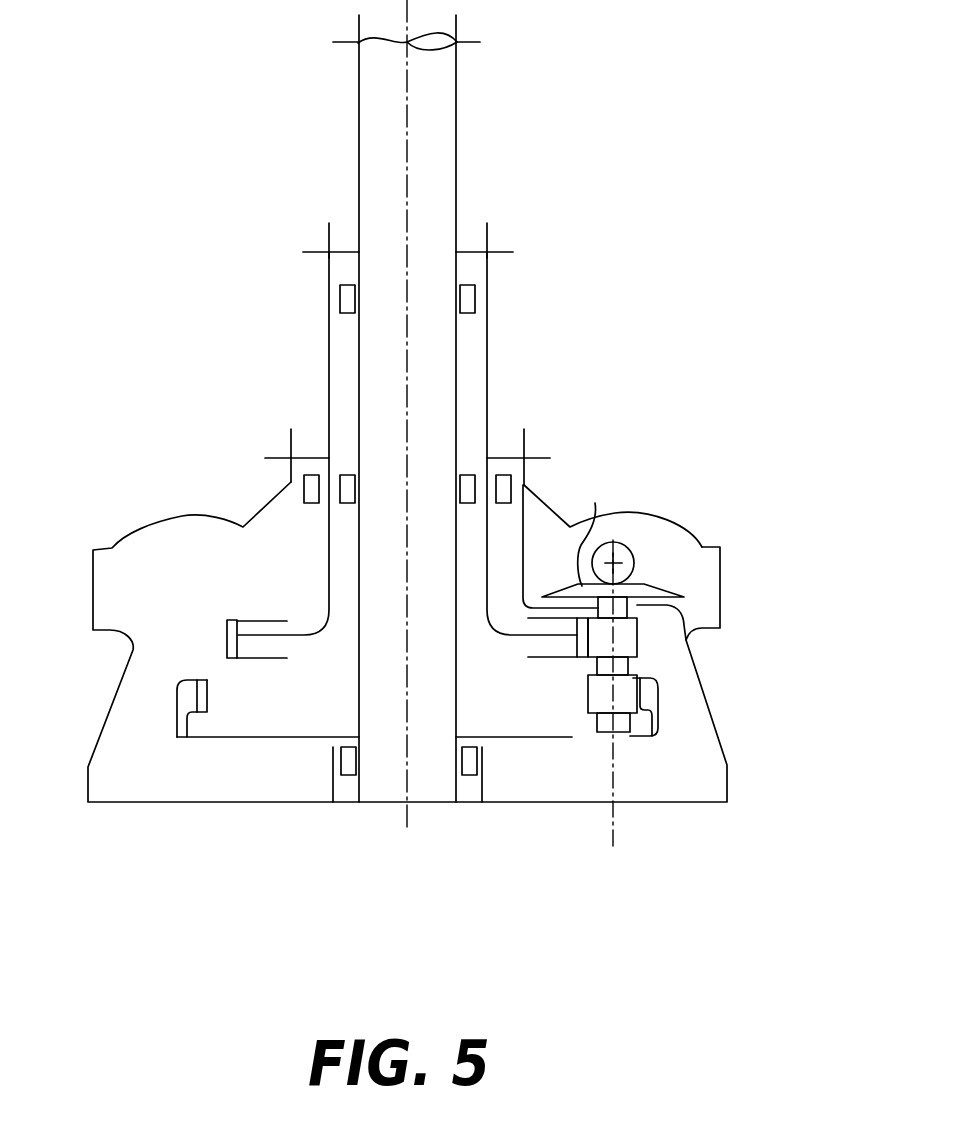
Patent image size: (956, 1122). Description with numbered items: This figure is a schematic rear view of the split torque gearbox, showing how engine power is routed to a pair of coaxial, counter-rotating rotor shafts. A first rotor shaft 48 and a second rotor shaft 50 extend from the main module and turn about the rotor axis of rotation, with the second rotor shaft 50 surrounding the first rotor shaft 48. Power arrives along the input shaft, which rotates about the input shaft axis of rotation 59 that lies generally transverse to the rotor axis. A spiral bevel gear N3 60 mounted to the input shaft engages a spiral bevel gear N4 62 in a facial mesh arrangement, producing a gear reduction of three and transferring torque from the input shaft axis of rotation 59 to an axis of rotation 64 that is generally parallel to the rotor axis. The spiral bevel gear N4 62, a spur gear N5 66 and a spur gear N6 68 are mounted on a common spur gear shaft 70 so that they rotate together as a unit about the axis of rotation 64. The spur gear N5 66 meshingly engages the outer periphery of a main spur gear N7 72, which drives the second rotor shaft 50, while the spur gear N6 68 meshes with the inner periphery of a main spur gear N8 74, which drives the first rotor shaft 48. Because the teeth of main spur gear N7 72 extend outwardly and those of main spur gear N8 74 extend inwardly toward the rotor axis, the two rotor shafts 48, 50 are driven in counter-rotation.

The first rotor shaft 48 is at (457, 125).
The second rotor shaft 50 is at (487, 342).
The input shaft axis of rotation 59 is at (622, 563).
The spiral bevel gear N3 60 is at (620, 548).
The spiral bevel gear N4 62 is at (595, 526).
The axis of rotation 64 is at (617, 825).
The spur gear N5 66 is at (622, 639).
The spur gear N6 68 is at (596, 697).
The spur gear shaft 70 is at (591, 723).
The main spur gear N7 72 is at (320, 637).
The main spur gear N8 74 is at (262, 738).